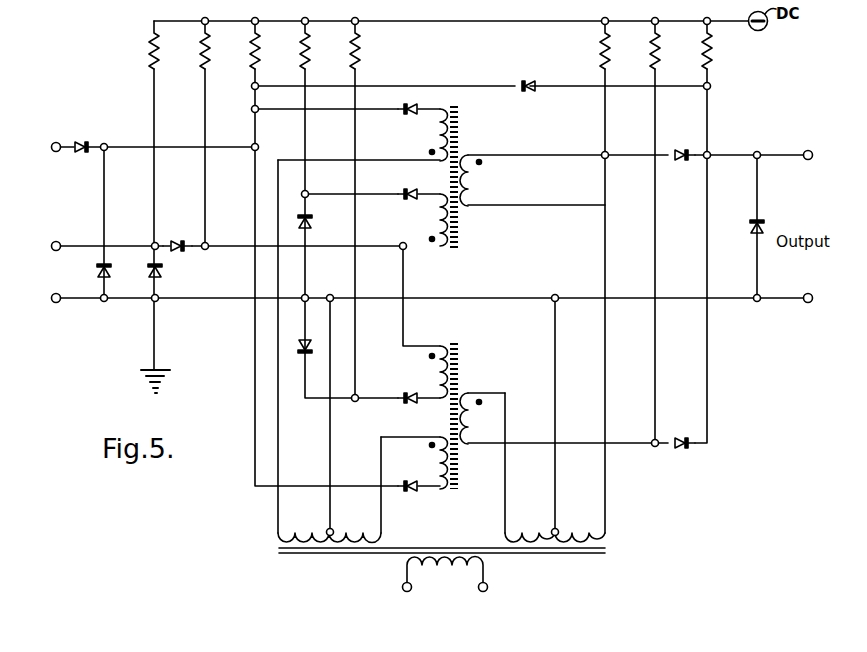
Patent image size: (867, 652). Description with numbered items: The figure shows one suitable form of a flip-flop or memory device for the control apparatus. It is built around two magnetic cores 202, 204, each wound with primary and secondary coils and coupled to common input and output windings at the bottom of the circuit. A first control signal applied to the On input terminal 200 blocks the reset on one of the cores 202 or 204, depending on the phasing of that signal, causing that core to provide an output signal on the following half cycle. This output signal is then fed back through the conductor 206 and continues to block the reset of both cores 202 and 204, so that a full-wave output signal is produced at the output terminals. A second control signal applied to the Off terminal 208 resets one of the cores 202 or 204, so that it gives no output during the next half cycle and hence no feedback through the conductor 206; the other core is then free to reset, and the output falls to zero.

The On input terminal 200 is at (58, 152).
The Off terminal 208 is at (58, 251).
The core 202 is at (455, 145).
The core 204 is at (457, 382).
The conductor 206 is at (428, 87).